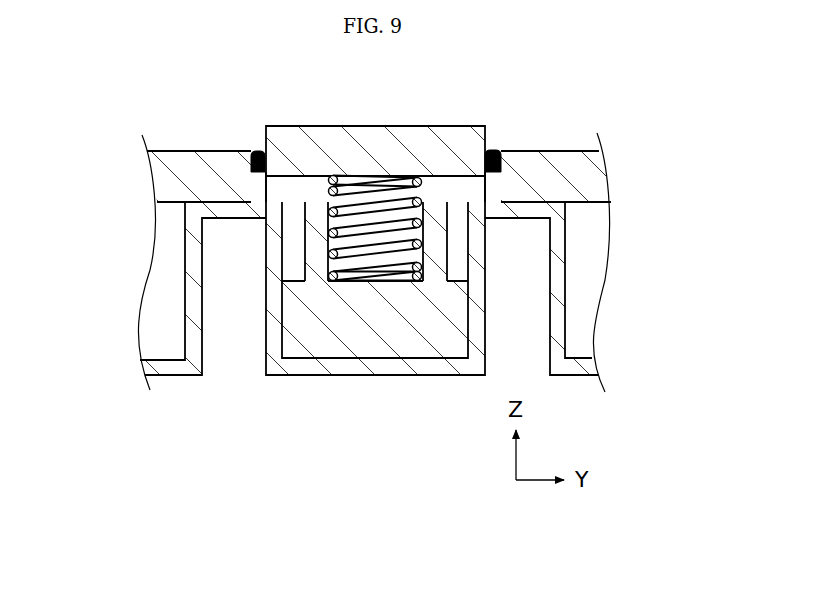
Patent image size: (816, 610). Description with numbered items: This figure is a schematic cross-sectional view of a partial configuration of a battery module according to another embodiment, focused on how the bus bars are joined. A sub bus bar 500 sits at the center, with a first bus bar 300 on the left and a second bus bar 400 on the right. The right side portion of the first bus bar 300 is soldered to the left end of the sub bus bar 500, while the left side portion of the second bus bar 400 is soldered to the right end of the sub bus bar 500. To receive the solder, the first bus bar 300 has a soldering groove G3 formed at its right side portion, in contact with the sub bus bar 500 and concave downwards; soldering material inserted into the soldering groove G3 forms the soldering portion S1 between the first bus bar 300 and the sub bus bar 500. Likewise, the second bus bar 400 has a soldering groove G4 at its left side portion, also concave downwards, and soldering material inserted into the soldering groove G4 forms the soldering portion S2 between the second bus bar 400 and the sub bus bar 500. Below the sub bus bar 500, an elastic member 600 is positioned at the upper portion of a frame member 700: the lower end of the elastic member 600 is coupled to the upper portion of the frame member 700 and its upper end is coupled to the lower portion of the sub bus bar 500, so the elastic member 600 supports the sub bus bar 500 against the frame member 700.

The first bus bar 300 is at (197, 150).
The second bus bar 400 is at (550, 150).
The sub bus bar 500 is at (415, 125).
The elastic member 600 is at (372, 270).
The frame member 700 is at (428, 376).
The soldering portion S1 is at (254, 142).
The soldering portion S2 is at (497, 142).
The soldering groove G3 is at (257, 182).
The soldering groove G4 is at (495, 182).